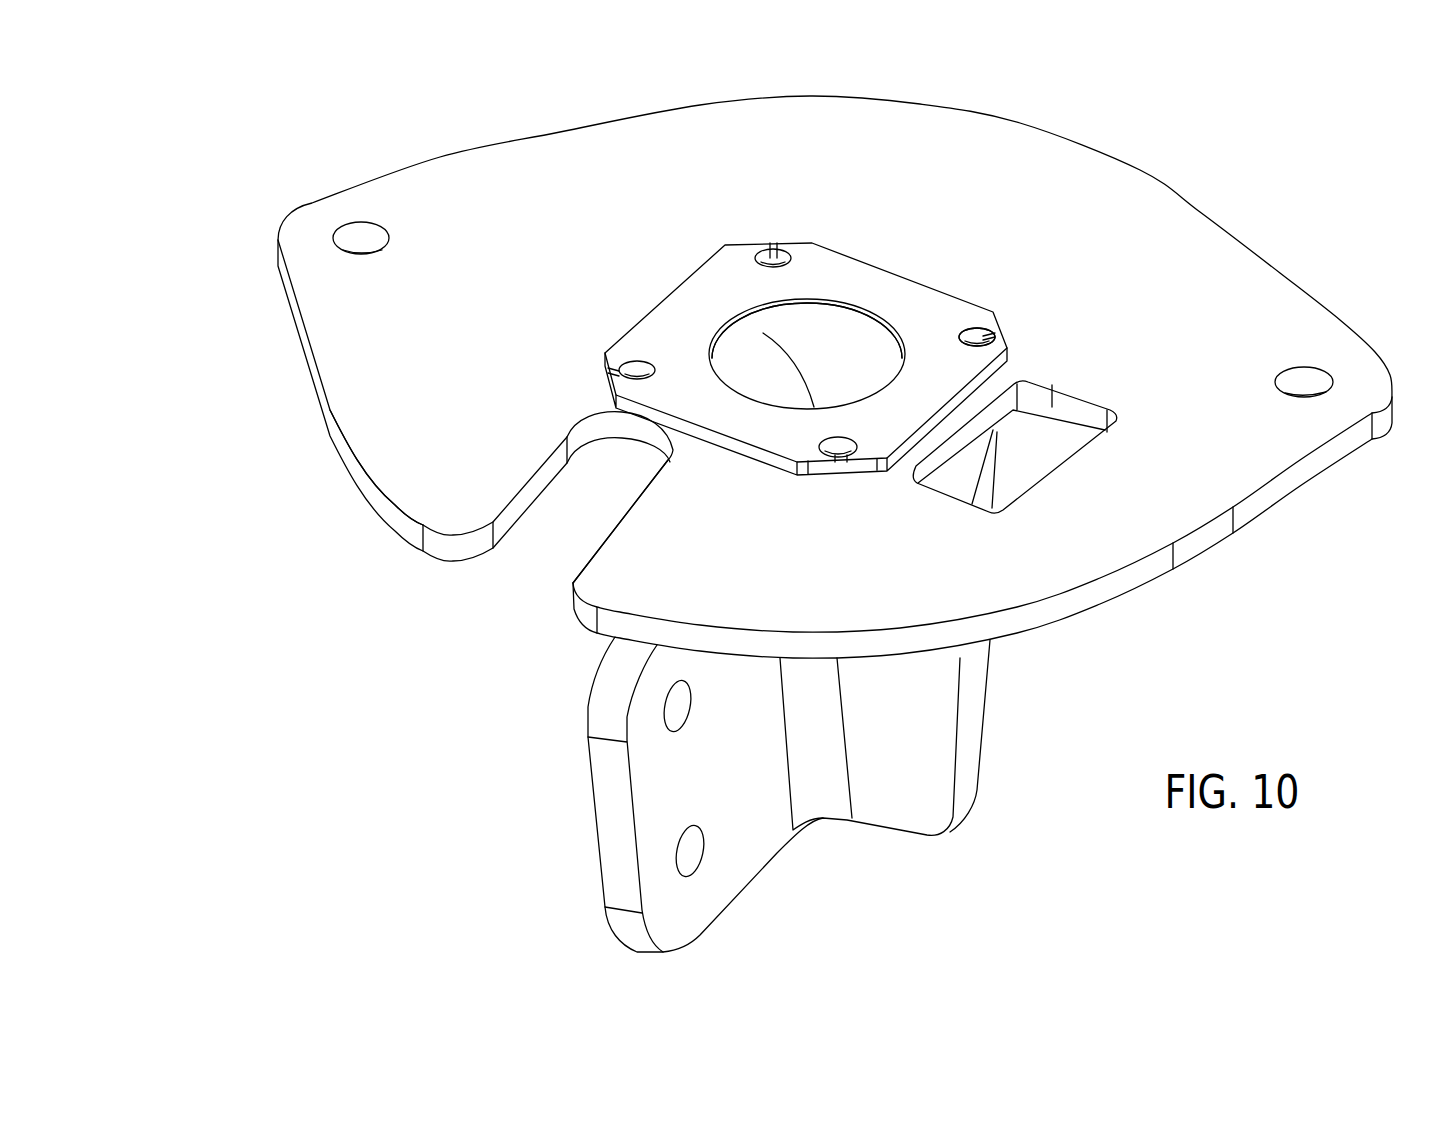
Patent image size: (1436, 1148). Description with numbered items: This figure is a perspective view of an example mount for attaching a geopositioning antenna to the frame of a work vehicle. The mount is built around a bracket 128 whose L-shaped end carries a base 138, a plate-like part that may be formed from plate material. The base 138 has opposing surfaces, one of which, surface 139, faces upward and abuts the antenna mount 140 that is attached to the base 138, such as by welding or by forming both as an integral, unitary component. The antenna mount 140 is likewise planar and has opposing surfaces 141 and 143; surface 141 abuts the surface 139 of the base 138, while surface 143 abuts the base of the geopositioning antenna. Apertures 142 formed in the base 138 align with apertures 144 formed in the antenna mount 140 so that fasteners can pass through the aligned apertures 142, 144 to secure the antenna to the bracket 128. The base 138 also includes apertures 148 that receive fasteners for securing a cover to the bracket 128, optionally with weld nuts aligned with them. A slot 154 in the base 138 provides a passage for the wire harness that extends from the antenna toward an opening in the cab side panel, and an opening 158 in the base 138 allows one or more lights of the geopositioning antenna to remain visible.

The bracket 128 is at (1093, 98).
The base 138 is at (440, 157).
The surface 139 is at (388, 383).
The antenna mount 140 is at (862, 310).
The surface 141 is at (880, 308).
The apertures 142 is at (966, 305).
The apertures 144 is at (977, 337).
The surface 143 is at (704, 300).
The apertures 148 is at (367, 255).
The slot 154 is at (637, 479).
The opening 158 is at (1052, 487).